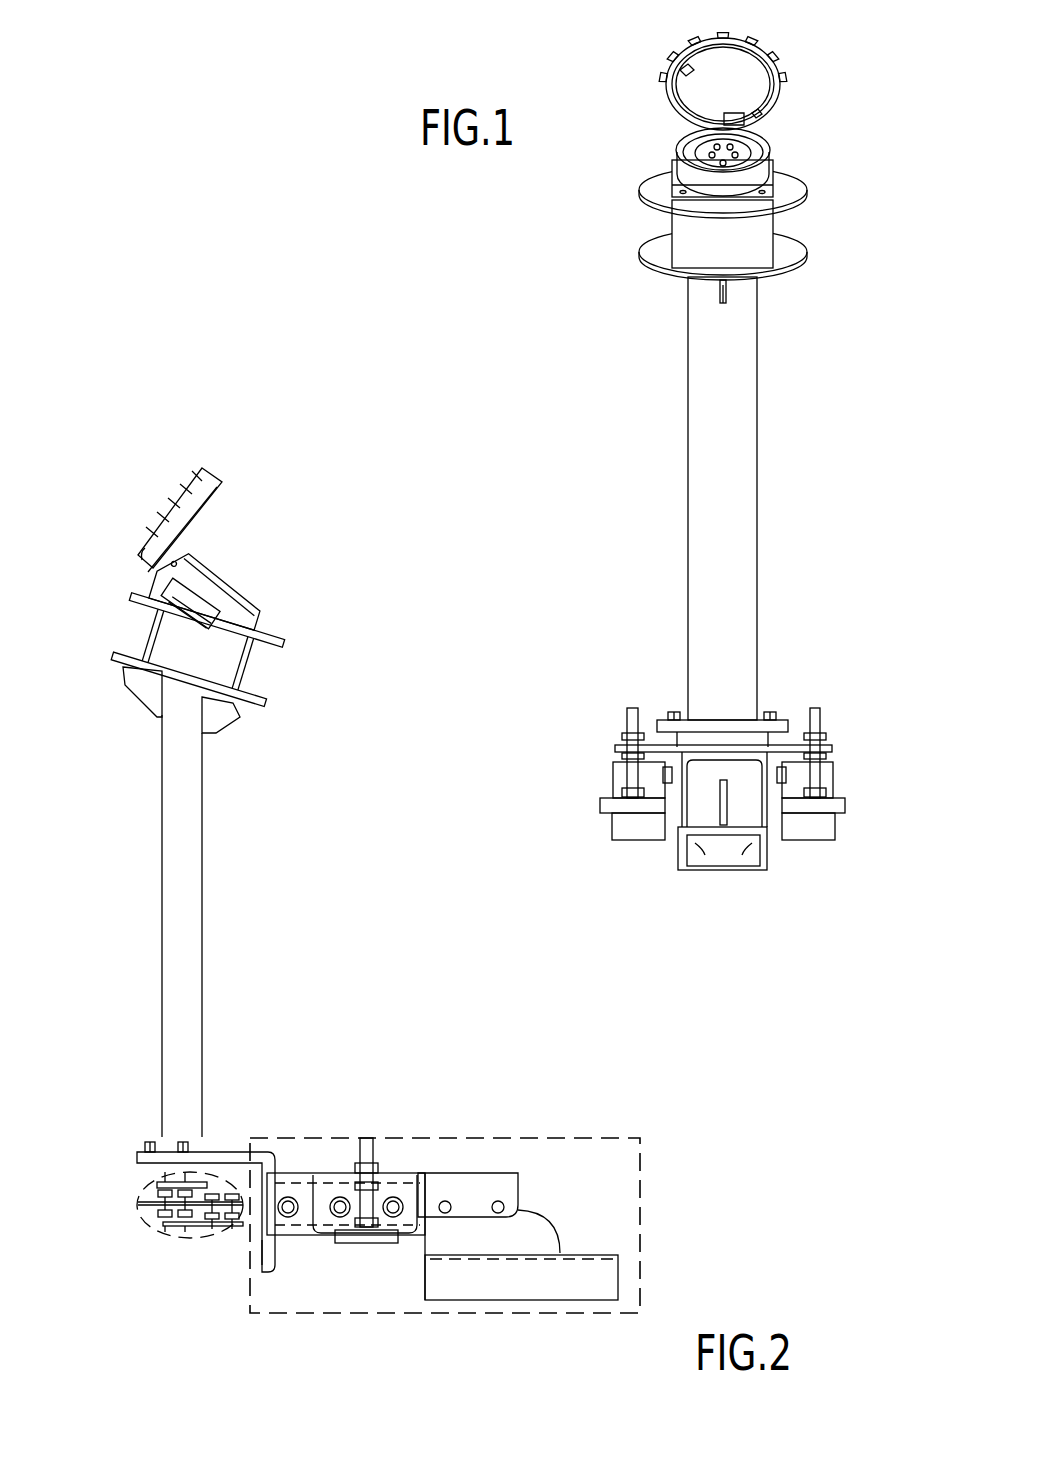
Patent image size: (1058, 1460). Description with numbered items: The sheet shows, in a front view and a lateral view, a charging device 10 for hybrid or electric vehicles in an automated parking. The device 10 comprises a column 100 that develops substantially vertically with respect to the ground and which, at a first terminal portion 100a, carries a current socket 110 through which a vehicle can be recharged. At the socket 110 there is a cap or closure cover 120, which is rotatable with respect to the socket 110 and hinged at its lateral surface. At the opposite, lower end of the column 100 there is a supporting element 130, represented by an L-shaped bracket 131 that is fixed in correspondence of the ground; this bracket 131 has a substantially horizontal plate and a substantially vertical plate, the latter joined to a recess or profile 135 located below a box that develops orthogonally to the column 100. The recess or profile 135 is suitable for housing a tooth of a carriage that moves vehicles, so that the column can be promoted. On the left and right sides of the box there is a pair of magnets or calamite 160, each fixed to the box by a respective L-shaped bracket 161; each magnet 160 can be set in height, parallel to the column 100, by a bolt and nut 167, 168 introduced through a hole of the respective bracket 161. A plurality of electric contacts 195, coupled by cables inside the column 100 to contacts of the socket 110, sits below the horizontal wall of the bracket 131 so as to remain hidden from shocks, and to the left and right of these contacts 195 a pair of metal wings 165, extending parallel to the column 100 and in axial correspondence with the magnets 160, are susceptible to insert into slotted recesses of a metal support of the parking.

In FIG. 1, the charging device 10 is at (726, 470).
In FIG. 2, the charging device 10 is at (346, 906).
In FIG. 1, the column 100 is at (743, 473).
In FIG. 2, the column 100 is at (188, 817).
In FIG. 1, the first terminal portion 100a is at (800, 299).
In FIG. 1, the current socket 110 is at (688, 152).
In FIG. 2, the current socket 110 is at (233, 608).
In FIG. 1, the cap or closure cover 120 is at (667, 88).
In FIG. 2, the cap or closure cover 120 is at (170, 518).
In FIG. 2, the supporting element 130 is at (346, 1207).
In FIG. 2, the L-shaped bracket 131 is at (223, 1162).
In FIG. 1, the recess or profile 135 is at (733, 857).
In FIG. 2, the recess or profile 135 is at (545, 1293).
In FIG. 1, the magnet or calamite 160 is at (610, 805).
In FIG. 2, the magnet or calamite 160 is at (363, 1237).
In FIG. 1, the L-shaped bracket 161 is at (657, 742).
In FIG. 2, the L-shaped bracket 161 is at (340, 1190).
In FIG. 1, the metal wing 165 is at (633, 822).
In FIG. 2, the metal wing 165 is at (263, 1263).
In FIG. 1, the bolt 167 is at (633, 780).
In FIG. 2, the bolt 167 is at (357, 1213).
In FIG. 1, the nut 168 is at (620, 748).
In FIG. 2, the nut 168 is at (378, 1172).
In FIG. 2, the electric contacts 195 is at (120, 1200).